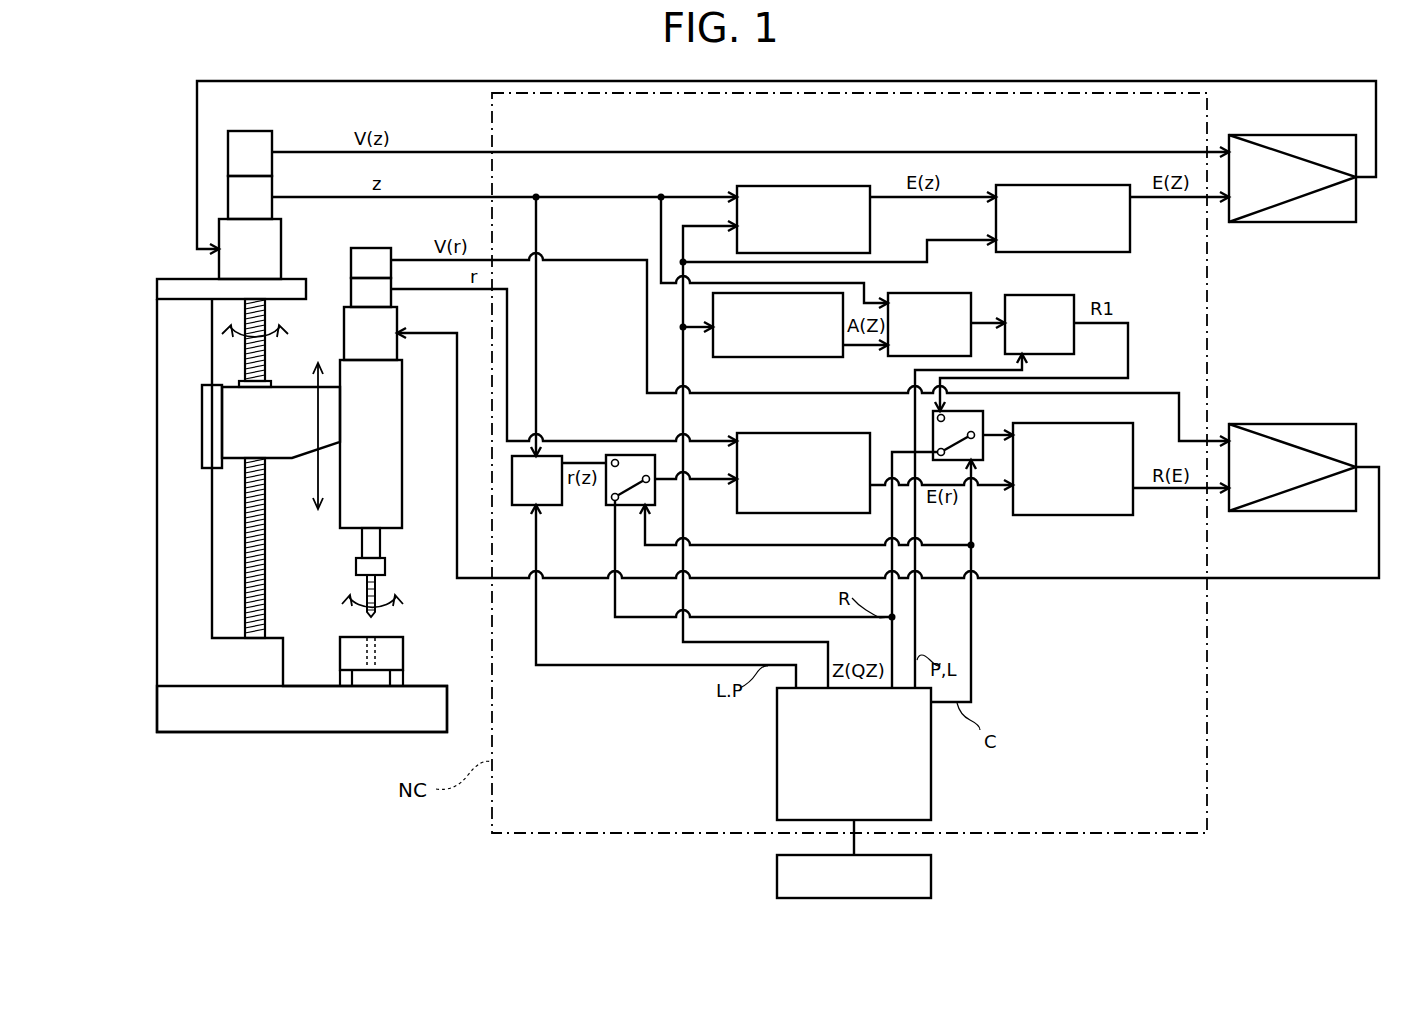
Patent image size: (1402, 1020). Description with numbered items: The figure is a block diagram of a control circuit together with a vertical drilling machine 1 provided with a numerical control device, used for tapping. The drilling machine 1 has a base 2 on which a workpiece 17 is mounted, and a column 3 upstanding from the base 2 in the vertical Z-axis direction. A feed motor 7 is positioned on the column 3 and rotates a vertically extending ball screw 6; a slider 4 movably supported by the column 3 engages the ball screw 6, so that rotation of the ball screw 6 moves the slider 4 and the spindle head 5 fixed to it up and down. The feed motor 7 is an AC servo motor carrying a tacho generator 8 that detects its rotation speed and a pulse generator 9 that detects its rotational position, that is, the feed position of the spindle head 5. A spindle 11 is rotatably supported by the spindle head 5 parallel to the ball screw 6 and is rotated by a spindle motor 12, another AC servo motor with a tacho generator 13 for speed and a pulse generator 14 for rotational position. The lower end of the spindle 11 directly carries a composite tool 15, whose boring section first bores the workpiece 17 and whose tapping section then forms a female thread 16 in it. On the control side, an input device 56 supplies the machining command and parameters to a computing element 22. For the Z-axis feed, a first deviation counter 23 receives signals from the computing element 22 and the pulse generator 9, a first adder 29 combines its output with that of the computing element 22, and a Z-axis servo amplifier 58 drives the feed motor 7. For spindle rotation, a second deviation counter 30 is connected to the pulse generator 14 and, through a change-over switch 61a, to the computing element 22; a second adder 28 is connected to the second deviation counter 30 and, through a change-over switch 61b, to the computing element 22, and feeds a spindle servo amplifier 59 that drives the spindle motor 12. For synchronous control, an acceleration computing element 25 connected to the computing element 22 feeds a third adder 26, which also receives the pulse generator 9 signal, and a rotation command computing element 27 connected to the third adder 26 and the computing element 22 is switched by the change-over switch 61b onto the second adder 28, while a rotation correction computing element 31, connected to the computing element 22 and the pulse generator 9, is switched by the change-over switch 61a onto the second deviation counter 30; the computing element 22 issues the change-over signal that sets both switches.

The drilling machine 1 is at (139, 301).
The base 2 is at (297, 722).
The column 3 is at (172, 655).
The slider 4 is at (210, 424).
The spindle head 5 is at (392, 465).
The ball screw 6 is at (245, 556).
The feed motor 7 is at (283, 254).
The tacho generator 8 is at (273, 140).
The pulse generator 9 is at (273, 191).
The spindle 11 is at (382, 545).
The spindle motor 12 is at (398, 358).
The tacho generator 13 is at (392, 252).
The pulse generator 14 is at (392, 289).
The composite tool 15 is at (378, 581).
The female thread 16 is at (367, 652).
The workpiece 17 is at (405, 650).
The computing element 22 is at (932, 790).
The first deviation counter 23 is at (800, 186).
The acceleration computing element 25 is at (810, 358).
The third adder 26 is at (925, 293).
The rotation command computing element 27 is at (1075, 337).
The second adder 28 is at (1102, 515).
The first adder 29 is at (1110, 253).
The second deviation counter 30 is at (765, 433).
The rotation correction computing element 31 is at (553, 507).
The input device 56 is at (932, 873).
The Z-axis servo amplifier 58 is at (1310, 223).
The spindle servo amplifier 59 is at (1300, 424).
The change-over switch 61a is at (628, 455).
The change-over switch 61b is at (933, 430).